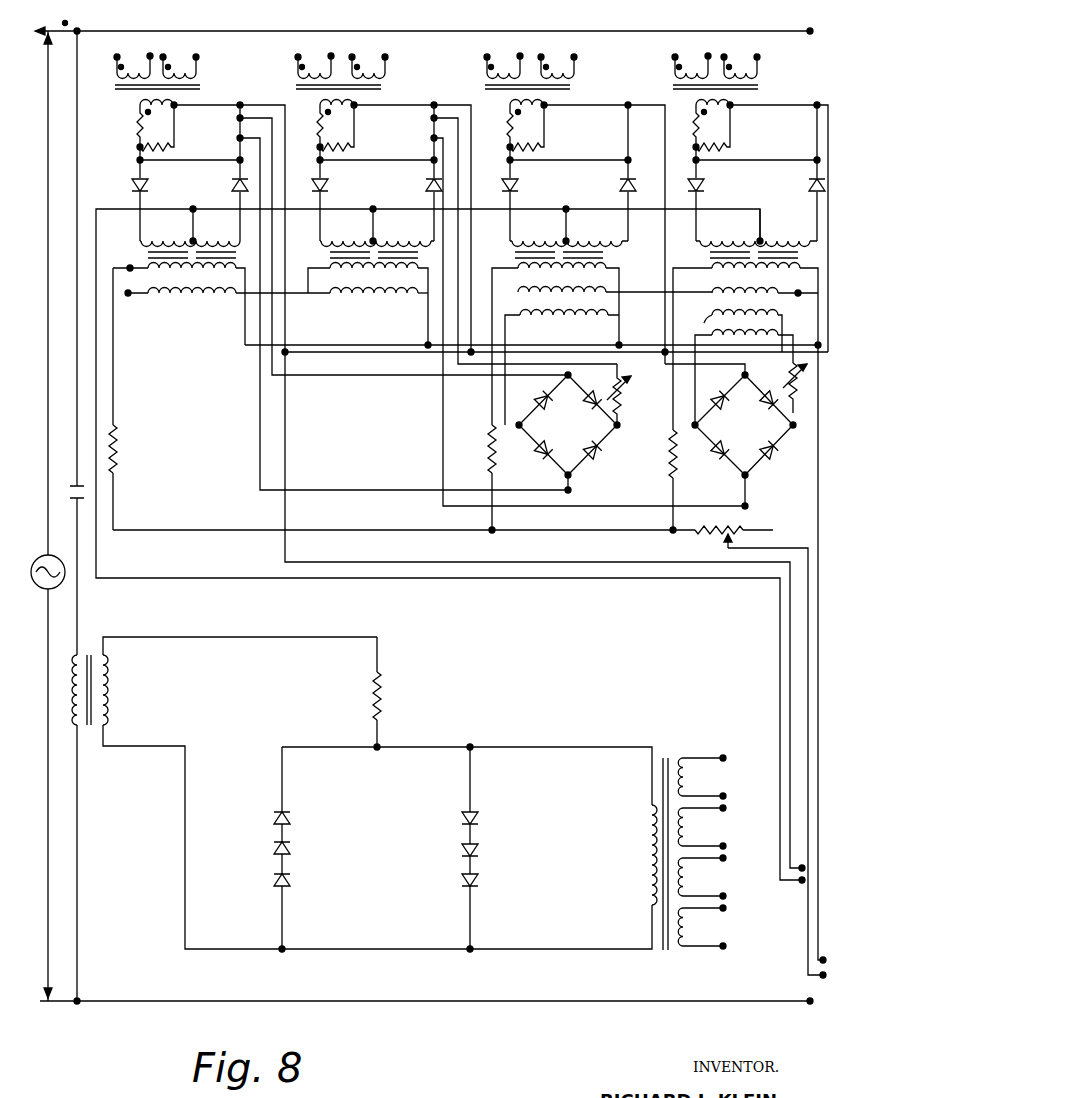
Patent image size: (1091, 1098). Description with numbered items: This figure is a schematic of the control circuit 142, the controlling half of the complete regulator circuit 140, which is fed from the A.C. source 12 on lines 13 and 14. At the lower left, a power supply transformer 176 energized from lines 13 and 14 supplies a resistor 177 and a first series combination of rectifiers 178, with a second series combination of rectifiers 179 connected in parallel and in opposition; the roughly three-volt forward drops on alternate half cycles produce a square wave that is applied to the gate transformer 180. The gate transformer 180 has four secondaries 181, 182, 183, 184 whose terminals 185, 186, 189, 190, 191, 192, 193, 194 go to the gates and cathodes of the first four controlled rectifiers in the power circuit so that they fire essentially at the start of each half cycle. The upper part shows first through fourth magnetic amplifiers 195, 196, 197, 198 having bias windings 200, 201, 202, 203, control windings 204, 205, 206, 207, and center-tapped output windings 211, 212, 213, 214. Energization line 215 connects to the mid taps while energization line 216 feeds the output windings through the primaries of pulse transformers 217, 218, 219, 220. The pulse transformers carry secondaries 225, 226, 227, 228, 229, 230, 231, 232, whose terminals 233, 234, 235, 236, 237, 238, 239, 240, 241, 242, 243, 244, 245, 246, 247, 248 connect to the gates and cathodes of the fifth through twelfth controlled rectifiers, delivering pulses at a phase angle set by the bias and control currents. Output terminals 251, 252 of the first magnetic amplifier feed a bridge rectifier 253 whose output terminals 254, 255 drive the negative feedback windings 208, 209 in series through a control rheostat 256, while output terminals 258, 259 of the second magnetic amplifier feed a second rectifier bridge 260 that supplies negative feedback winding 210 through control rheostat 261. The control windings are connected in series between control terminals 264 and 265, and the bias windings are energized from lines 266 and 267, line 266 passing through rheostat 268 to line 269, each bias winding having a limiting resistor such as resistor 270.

The A.C. source 12 is at (49, 555).
The line 13 is at (810, 31).
The line 14 is at (790, 1005).
The regulator circuit 140 is at (745, 637).
The control circuit 142 is at (215, 430).
The power supply transformer 176 is at (90, 730).
The resistor 177 is at (378, 694).
The first series combination of rectifiers 178 is at (290, 880).
The second series combination of rectifiers 179 is at (478, 880).
The gate transformer 180 is at (668, 955).
The first secondary 181 is at (688, 782).
The secondary 182 is at (688, 833).
The secondary 183 is at (688, 889).
The secondary 184 is at (688, 932).
The terminal 185 is at (723, 758).
The terminal 186 is at (723, 796).
The terminal 189 is at (723, 808).
The terminal 190 is at (723, 846).
The terminal 191 is at (723, 858).
The terminal 192 is at (723, 896).
The terminal 193 is at (723, 908).
The terminal 194 is at (723, 946).
The first magnetic amplifier 195 is at (137, 252).
The second magnetic amplifier 196 is at (325, 252).
The third magnetic amplifier 197 is at (513, 252).
The fourth magnetic amplifier 198 is at (708, 252).
The bias winding 200 is at (130, 270).
The bias winding 201 is at (345, 270).
The bias winding 202 is at (614, 268).
The bias winding 203 is at (712, 269).
The control winding 204 is at (198, 295).
The control winding 205 is at (387, 303).
The control winding 206 is at (606, 295).
The control winding 207 is at (712, 293).
The negative feedback winding 208 is at (590, 315).
The negative feedback winding 209 is at (712, 315).
The negative feedback winding 210 is at (773, 337).
The output winding 211 is at (165, 232).
The output winding 212 is at (352, 232).
The output winding 213 is at (542, 232).
The output winding 214 is at (730, 232).
The line 215 is at (286, 578).
The energization line 216 is at (282, 558).
The pulse transformer 217 is at (122, 94).
The pulse transformer 218 is at (382, 89).
The pulse transformer 219 is at (568, 91).
The pulse transformer 220 is at (752, 91).
The secondary 225 is at (130, 74).
The secondary 226 is at (178, 73).
The secondary 227 is at (311, 74).
The secondary 228 is at (367, 73).
The secondary 229 is at (500, 74).
The secondary 230 is at (556, 73).
The secondary 231 is at (688, 74).
The secondary 232 is at (740, 73).
The terminal 233 is at (117, 57).
The terminal 234 is at (150, 56).
The terminal 235 is at (163, 57).
The terminal 236 is at (196, 57).
The terminal 237 is at (298, 57).
The terminal 238 is at (331, 56).
The terminal 239 is at (352, 57).
The terminal 240 is at (385, 57).
The terminal 241 is at (487, 57).
The terminal 242 is at (520, 56).
The terminal 243 is at (541, 57).
The terminal 244 is at (588, 48).
The terminal 245 is at (675, 57).
The terminal 246 is at (708, 56).
The terminal 247 is at (724, 57).
The terminal 248 is at (757, 57).
The output terminal 251 is at (240, 120).
The output terminal 252 is at (240, 141).
The bridge rectifier 253 is at (579, 428).
The output terminal 254 is at (618, 428).
The output terminal 255 is at (518, 423).
The control rheostat 256 is at (624, 393).
The output terminal 258 is at (434, 120).
The output terminal 259 is at (434, 141).
The second rectifier bridge 260 is at (755, 428).
The control rheostat 261 is at (788, 372).
The control terminal 264 is at (128, 296).
The control terminal 265 is at (815, 288).
The line 266 is at (815, 976).
The line 267 is at (815, 956).
The rheostat 268 is at (745, 530).
The line 269 is at (382, 528).
The limiting resistor 270 is at (115, 435).